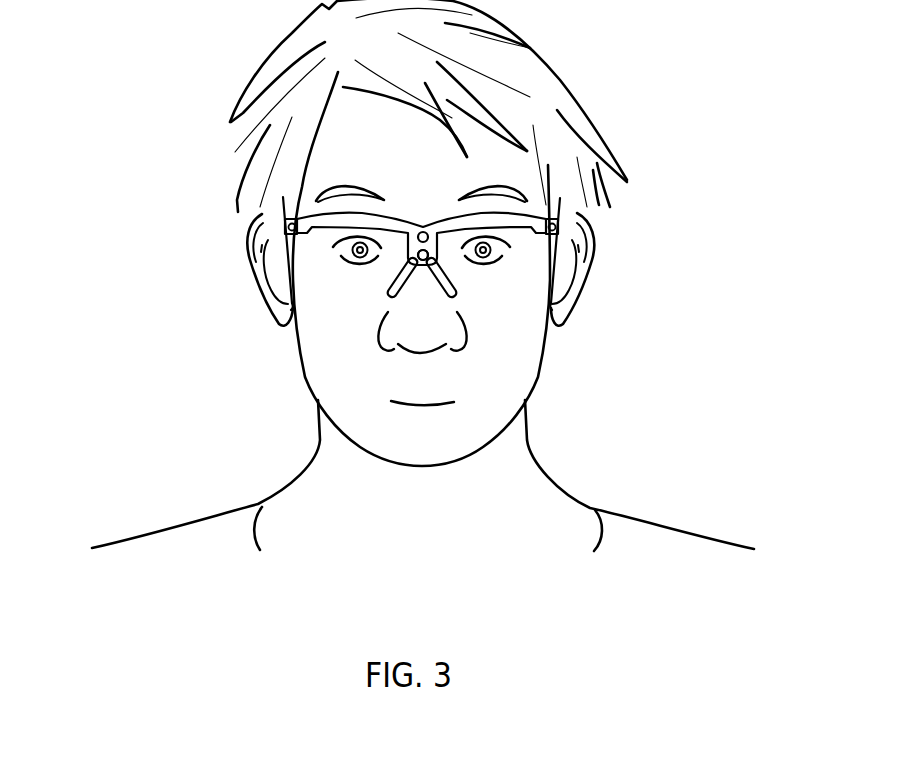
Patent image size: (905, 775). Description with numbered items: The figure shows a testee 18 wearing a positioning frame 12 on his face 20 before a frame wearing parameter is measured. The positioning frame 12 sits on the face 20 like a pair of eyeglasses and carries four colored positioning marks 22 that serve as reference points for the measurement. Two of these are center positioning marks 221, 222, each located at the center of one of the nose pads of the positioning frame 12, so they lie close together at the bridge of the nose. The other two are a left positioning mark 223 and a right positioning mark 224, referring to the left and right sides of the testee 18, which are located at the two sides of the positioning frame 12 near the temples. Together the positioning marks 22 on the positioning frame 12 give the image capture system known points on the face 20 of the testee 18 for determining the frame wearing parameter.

The positioning frame 12 is at (320, 218).
The testee 18 is at (191, 518).
The face 20 is at (308, 347).
The colored positioning marks 22 is at (422, 403).
The center positioning mark 221 is at (418, 258).
The center positioning mark 222 is at (428, 258).
The left positioning mark 223 is at (548, 234).
The right positioning mark 224 is at (298, 234).